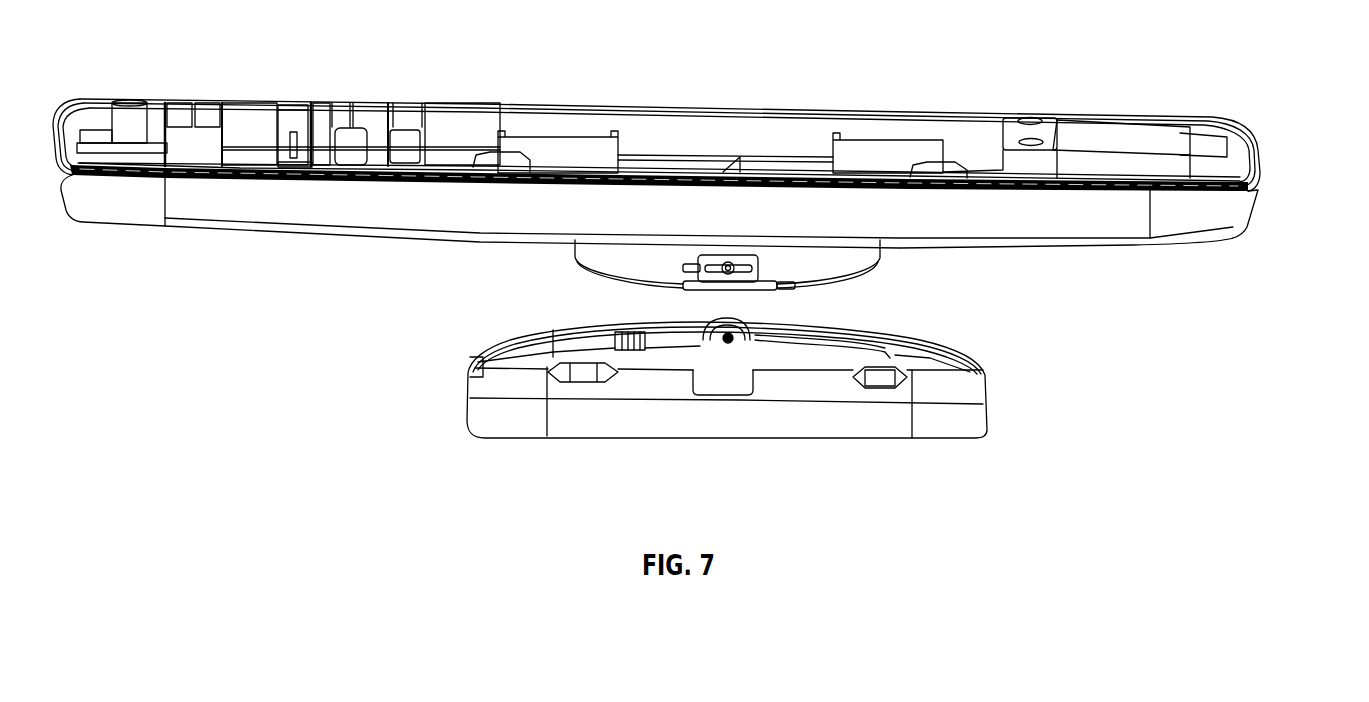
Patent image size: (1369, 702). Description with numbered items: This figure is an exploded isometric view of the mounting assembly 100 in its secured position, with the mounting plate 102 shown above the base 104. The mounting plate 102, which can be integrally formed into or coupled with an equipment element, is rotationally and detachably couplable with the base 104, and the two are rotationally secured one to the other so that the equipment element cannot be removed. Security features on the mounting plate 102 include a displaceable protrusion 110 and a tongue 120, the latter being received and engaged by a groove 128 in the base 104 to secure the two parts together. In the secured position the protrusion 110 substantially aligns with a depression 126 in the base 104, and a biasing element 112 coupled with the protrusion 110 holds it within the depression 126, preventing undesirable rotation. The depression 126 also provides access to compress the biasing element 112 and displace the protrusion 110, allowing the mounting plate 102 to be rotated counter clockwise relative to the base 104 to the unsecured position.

The mounting assembly 100 is at (707, 278).
The mounting plate 102 is at (880, 258).
The base 104 is at (727, 397).
The displaceable protrusion 110 is at (800, 283).
The biasing element 112 is at (683, 268).
The tongue 120 is at (683, 285).
The depression 126 is at (740, 396).
The groove 128 is at (643, 357).